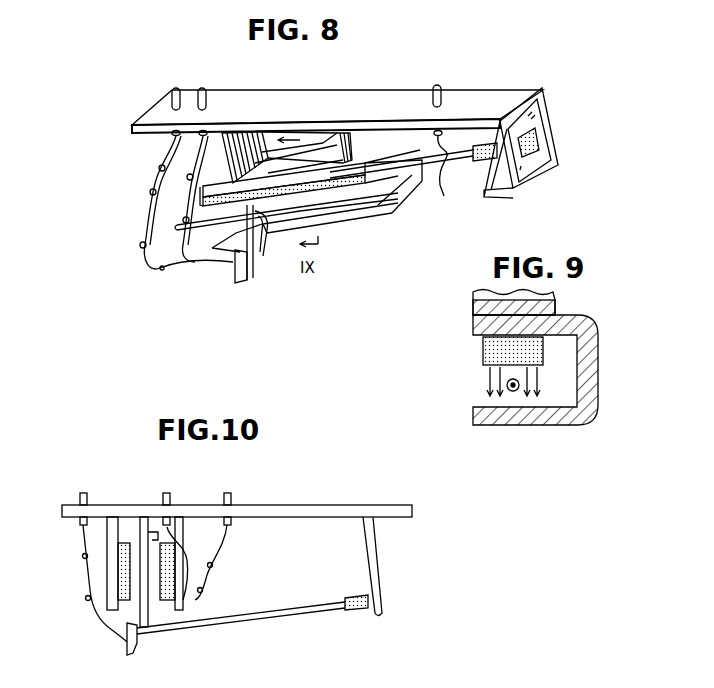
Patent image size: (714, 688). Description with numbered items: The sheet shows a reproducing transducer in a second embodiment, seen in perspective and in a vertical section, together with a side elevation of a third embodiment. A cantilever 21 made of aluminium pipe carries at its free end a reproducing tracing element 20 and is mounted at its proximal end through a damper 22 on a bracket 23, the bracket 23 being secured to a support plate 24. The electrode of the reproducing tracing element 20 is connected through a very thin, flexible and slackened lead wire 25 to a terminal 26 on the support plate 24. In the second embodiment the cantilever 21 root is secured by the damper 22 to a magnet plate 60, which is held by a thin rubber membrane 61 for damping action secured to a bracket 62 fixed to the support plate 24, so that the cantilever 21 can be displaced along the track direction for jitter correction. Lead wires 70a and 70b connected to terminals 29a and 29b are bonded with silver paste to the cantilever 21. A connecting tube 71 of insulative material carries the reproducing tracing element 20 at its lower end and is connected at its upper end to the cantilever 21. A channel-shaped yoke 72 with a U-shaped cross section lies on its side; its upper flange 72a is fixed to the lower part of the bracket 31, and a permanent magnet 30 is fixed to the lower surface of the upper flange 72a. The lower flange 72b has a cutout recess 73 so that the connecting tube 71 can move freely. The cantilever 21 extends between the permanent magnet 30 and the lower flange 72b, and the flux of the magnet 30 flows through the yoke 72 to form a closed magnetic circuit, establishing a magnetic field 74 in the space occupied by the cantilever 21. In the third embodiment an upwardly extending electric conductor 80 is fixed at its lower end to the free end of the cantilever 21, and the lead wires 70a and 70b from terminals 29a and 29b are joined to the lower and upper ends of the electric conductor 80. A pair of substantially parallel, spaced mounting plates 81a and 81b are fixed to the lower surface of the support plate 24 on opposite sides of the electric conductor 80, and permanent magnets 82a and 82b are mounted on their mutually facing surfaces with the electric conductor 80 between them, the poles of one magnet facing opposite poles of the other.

In FIG. 8, the reproducing tracing element 20 is at (233, 265).
In FIG. 10, the reproducing tracing element 20 is at (137, 645).
In FIG. 8, the cantilever 21 is at (355, 187).
In FIG. 9, the cantilever 21 is at (504, 383).
In FIG. 10, the cantilever 21 is at (255, 620).
In FIG. 8, the damper 22 is at (486, 180).
In FIG. 10, the damper 22 is at (356, 612).
In FIG. 10, the bracket 23 is at (376, 550).
In FIG. 8, the support plate 24 is at (398, 90).
In FIG. 10, the support plate 24 is at (322, 505).
In FIG. 8, the lead wire 25 is at (158, 180).
In FIG. 10, the lead wire 25 is at (95, 615).
In FIG. 8, the terminal 26 is at (176, 88).
In FIG. 10, the terminal 26 is at (82, 493).
In FIG. 8, the terminal 29a is at (440, 85).
In FIG. 10, the terminal 29a is at (230, 493).
In FIG. 8, the terminal 29b is at (203, 88).
In FIG. 10, the terminal 29b is at (166, 493).
In FIG. 8, the permanent magnet 30 is at (205, 232).
In FIG. 9, the permanent magnet 30 is at (483, 350).
In FIG. 8, the bracket 31 is at (318, 147).
In FIG. 9, the bracket 31 is at (473, 308).
In FIG. 8, the magnet plate 60 is at (535, 143).
In FIG. 8, the rubber membrane 61 is at (533, 118).
In FIG. 8, the bracket 62 is at (550, 176).
In FIG. 8, the lead wire 70a is at (441, 186).
In FIG. 10, the lead wire 70a is at (200, 597).
In FIG. 8, the lead wire 70b is at (172, 160).
In FIG. 10, the lead wire 70b is at (187, 518).
In FIG. 8, the connecting tube 71 is at (253, 275).
In FIG. 8, the channel-shaped yoke 72 is at (380, 226).
In FIG. 9, the channel-shaped yoke 72 is at (598, 338).
In FIG. 8, the upper flange 72a is at (203, 192).
In FIG. 9, the upper flange 72a is at (473, 326).
In FIG. 8, the lower flange 72b is at (400, 198).
In FIG. 9, the lower flange 72b is at (485, 426).
In FIG. 8, the cutout recess 73 is at (262, 257).
In FIG. 9, the cutout recess 73 is at (550, 430).
In FIG. 9, the magnetic field 74 is at (533, 378).
In FIG. 10, the electric conductor 80 is at (145, 533).
In FIG. 10, the mounting plate 81a is at (183, 545).
In FIG. 10, the mounting plate 81b is at (110, 545).
In FIG. 10, the permanent magnet 82a is at (172, 575).
In FIG. 10, the permanent magnet 82b is at (125, 572).